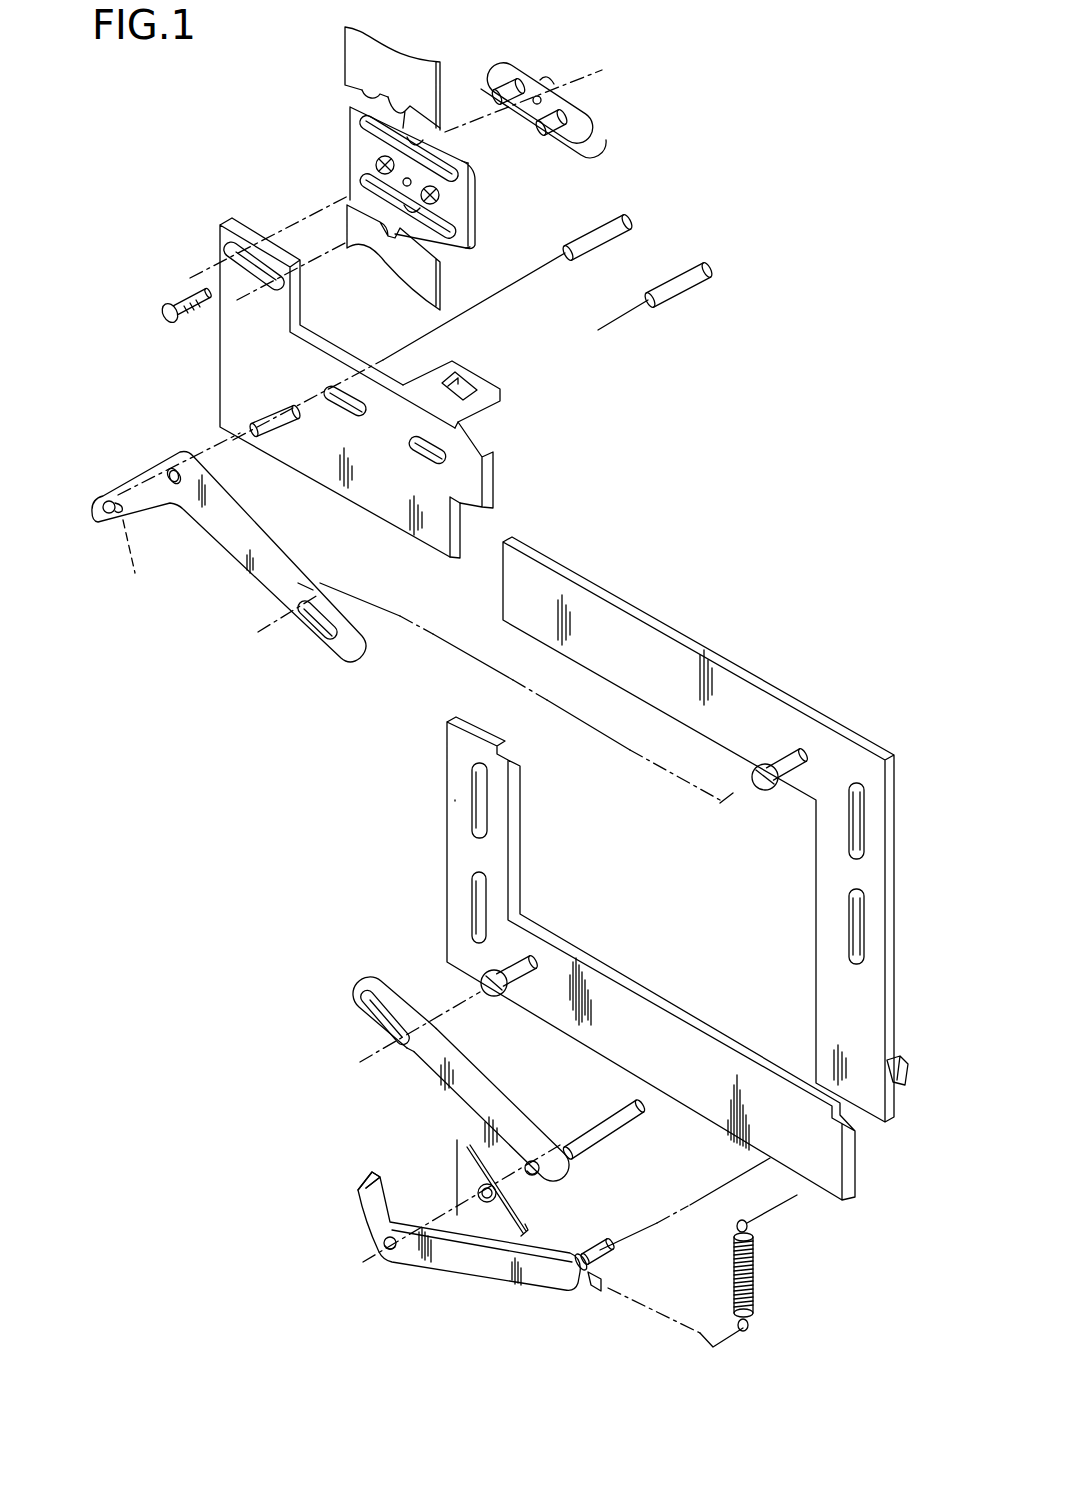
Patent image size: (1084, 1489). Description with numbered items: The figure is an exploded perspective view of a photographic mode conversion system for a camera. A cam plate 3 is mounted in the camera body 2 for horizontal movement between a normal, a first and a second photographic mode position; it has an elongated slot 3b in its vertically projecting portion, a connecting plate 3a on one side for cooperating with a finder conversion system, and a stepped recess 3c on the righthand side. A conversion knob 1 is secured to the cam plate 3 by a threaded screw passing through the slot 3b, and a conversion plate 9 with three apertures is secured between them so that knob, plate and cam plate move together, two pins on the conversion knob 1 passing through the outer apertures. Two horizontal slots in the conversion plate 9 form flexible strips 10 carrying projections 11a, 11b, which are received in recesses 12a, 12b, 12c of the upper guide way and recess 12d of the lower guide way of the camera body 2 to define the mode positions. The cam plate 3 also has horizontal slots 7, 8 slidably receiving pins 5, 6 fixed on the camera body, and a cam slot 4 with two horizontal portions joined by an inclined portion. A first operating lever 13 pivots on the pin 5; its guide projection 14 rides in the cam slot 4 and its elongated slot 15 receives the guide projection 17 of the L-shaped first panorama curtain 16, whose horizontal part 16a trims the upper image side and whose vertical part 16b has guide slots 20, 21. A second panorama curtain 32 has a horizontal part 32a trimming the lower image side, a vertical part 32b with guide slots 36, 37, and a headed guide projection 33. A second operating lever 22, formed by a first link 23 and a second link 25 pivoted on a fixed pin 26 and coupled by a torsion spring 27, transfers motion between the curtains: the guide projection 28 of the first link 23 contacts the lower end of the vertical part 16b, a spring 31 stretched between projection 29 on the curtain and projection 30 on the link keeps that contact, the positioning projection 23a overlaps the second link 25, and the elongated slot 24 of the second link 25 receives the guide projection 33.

The conversion knob 1 is at (517, 60).
The camera body 2 is at (345, 66).
The cam plate 3 is at (354, 399).
The connecting plate 3a is at (497, 405).
The elongated slot 3b is at (236, 250).
The recess 3c is at (450, 540).
The cam slot 4 is at (250, 428).
The pin 5 is at (613, 229).
The pin 6 is at (693, 277).
The elongated horizontal slot 7 is at (334, 403).
The elongated horizontal slot 8 is at (420, 456).
The conversion plate 9 is at (406, 192).
The flexible strips 10 is at (348, 185).
The projection 11a is at (487, 153).
The projection 11b is at (447, 247).
The recess 12a is at (397, 110).
The recess 12b is at (405, 135).
The recess 12c is at (368, 96).
The recess 12d is at (390, 238).
The first operating lever 13 is at (229, 567).
The guide projection 14 is at (129, 553).
The elongated slot 15 is at (314, 640).
The first panorama curtain 16 is at (719, 829).
The horizontal part 16a is at (636, 632).
The vertical part 16b is at (832, 1013).
The guide projection 17 is at (765, 788).
The guide slot 20 is at (850, 843).
The guide slot 21 is at (850, 917).
The second operating lever 22 is at (441, 1159).
The first link 23 is at (408, 1246).
The positioning projection 23a is at (357, 1180).
The elongated slot 24 is at (364, 1003).
The second link 25 is at (432, 1079).
The pin 26 is at (600, 1123).
The torsion spring 27 is at (477, 1190).
The guide projection 28 is at (597, 1247).
The projection 29 is at (893, 1060).
The projection 30 is at (591, 1288).
The spring 31 is at (753, 1290).
The second panorama curtain 32 is at (608, 958).
The horizontal part 32a is at (643, 1007).
The vertical part 32b is at (497, 859).
The guide projection 33 is at (480, 983).
The guide slot 36 is at (475, 782).
The guide slot 37 is at (475, 895).